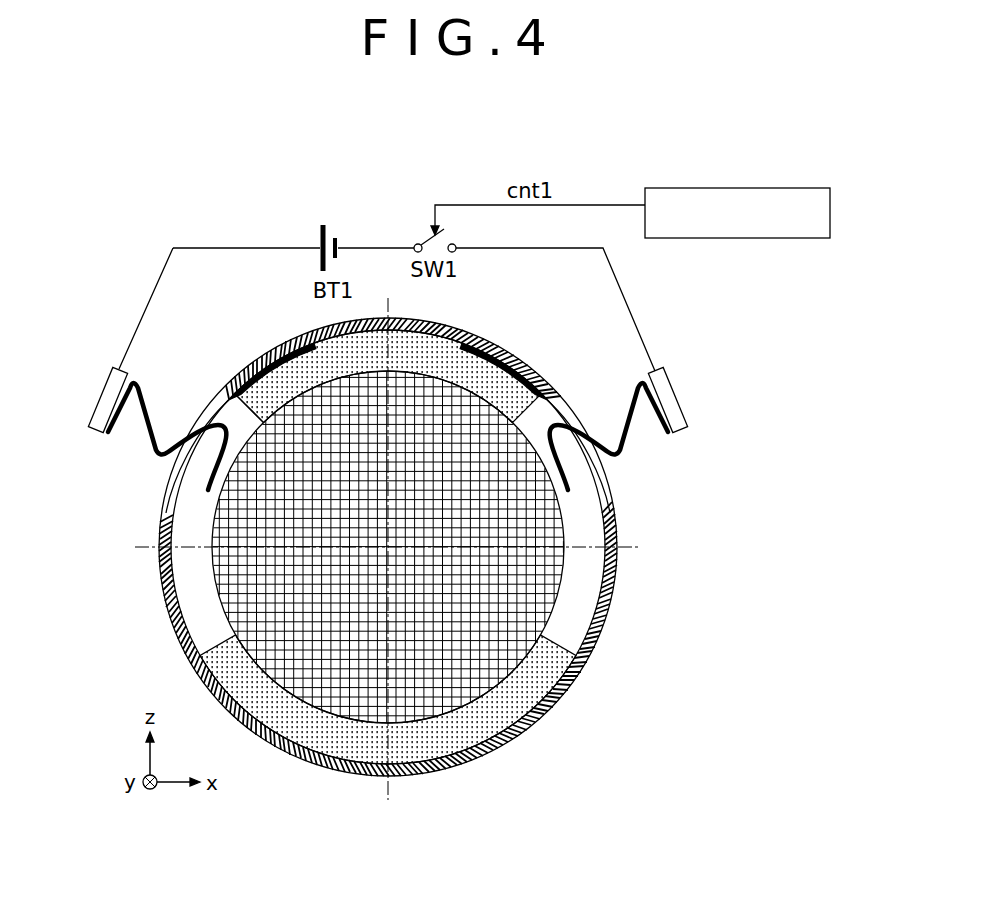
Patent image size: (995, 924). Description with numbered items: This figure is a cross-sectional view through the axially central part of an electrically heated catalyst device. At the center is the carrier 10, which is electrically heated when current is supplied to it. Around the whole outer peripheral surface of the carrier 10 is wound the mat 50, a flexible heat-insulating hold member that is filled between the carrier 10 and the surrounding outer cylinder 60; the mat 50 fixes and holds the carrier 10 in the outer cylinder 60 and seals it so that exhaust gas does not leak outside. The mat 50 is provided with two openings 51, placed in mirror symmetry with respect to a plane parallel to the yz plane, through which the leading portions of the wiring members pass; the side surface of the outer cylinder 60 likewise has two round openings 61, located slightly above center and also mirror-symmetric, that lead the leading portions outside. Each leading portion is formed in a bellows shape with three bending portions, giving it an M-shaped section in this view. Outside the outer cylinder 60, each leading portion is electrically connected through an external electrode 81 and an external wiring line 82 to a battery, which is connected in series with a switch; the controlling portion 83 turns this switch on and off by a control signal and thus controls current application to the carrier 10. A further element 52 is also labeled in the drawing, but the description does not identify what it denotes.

The carrier 10 is at (405, 528).
The mat 50 is at (405, 365).
The opening 51 is at (248, 412).
The coil 52 is at (152, 428).
The outer cylinder 60 is at (273, 352).
The opening 61 is at (223, 395).
The external electrode 81 is at (89, 428).
The external wiring line 82 is at (148, 308).
The controlling portion 83 is at (745, 239).